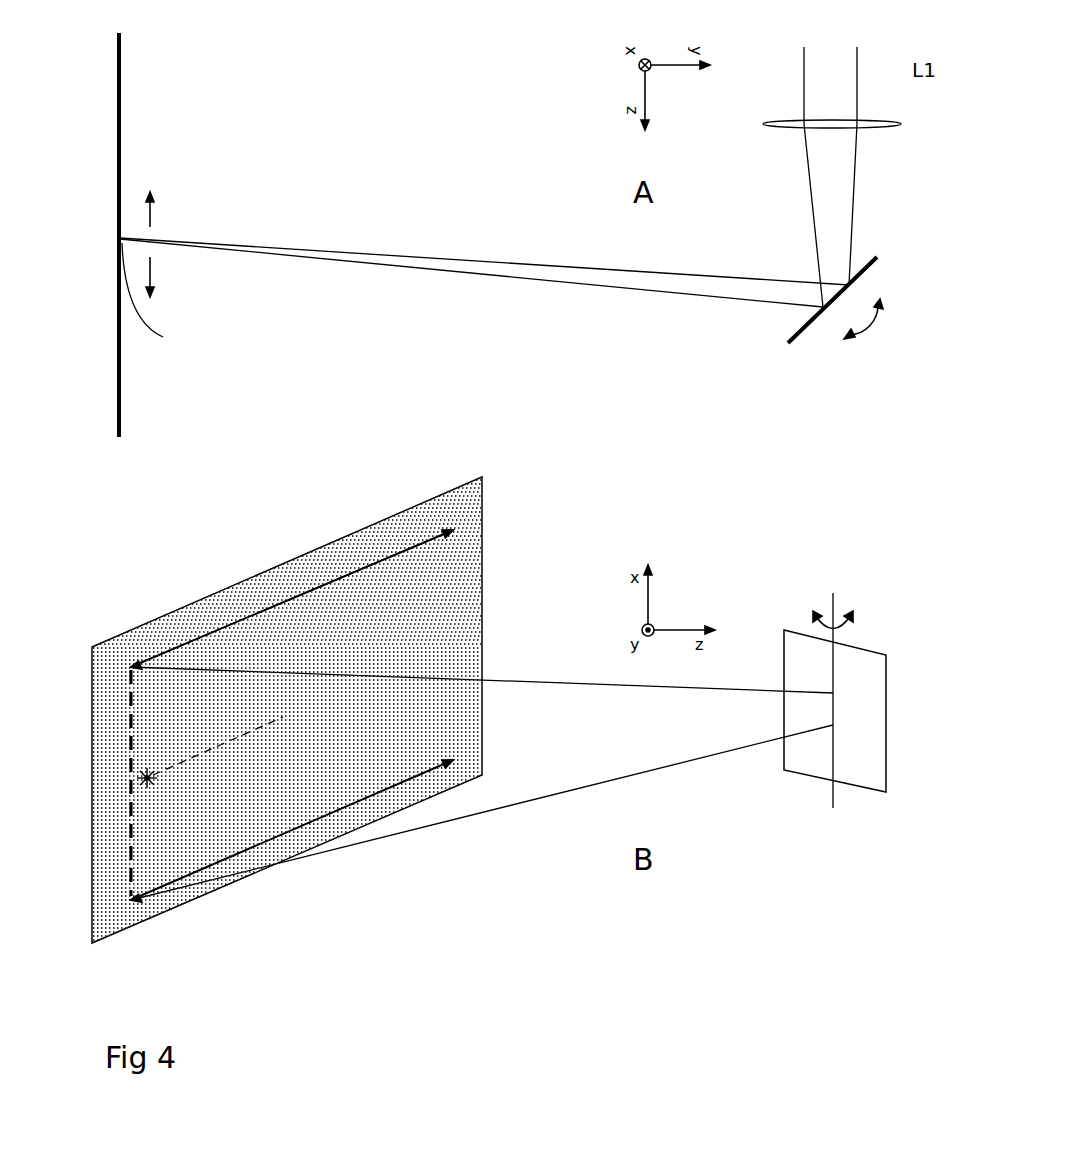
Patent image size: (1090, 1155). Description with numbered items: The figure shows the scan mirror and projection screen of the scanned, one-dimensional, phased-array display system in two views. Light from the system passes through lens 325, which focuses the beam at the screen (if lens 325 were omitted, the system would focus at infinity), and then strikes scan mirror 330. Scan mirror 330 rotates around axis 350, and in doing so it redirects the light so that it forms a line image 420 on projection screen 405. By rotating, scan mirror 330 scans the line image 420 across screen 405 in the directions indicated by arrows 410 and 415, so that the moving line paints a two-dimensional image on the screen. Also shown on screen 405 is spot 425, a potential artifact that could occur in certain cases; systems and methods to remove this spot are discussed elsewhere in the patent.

In FIG. 4A, the projection screen 405 is at (125, 75).
In FIG. 4B, the projection screen 405 is at (342, 540).
In FIG. 4A, the arrows 410 is at (150, 272).
In FIG. 4B, the arrows 415 is at (220, 628).
In FIG. 4A, the line image 420 is at (162, 295).
In FIG. 4B, the line image 420 is at (122, 848).
In FIG. 4B, the spot 425 is at (140, 775).
In FIG. 4A, the lens 325 is at (783, 128).
In FIG. 4A, the scan mirror 330 is at (807, 337).
In FIG. 4B, the scan mirror 330 is at (870, 657).
In FIG. 4B, the axis 350 is at (832, 795).